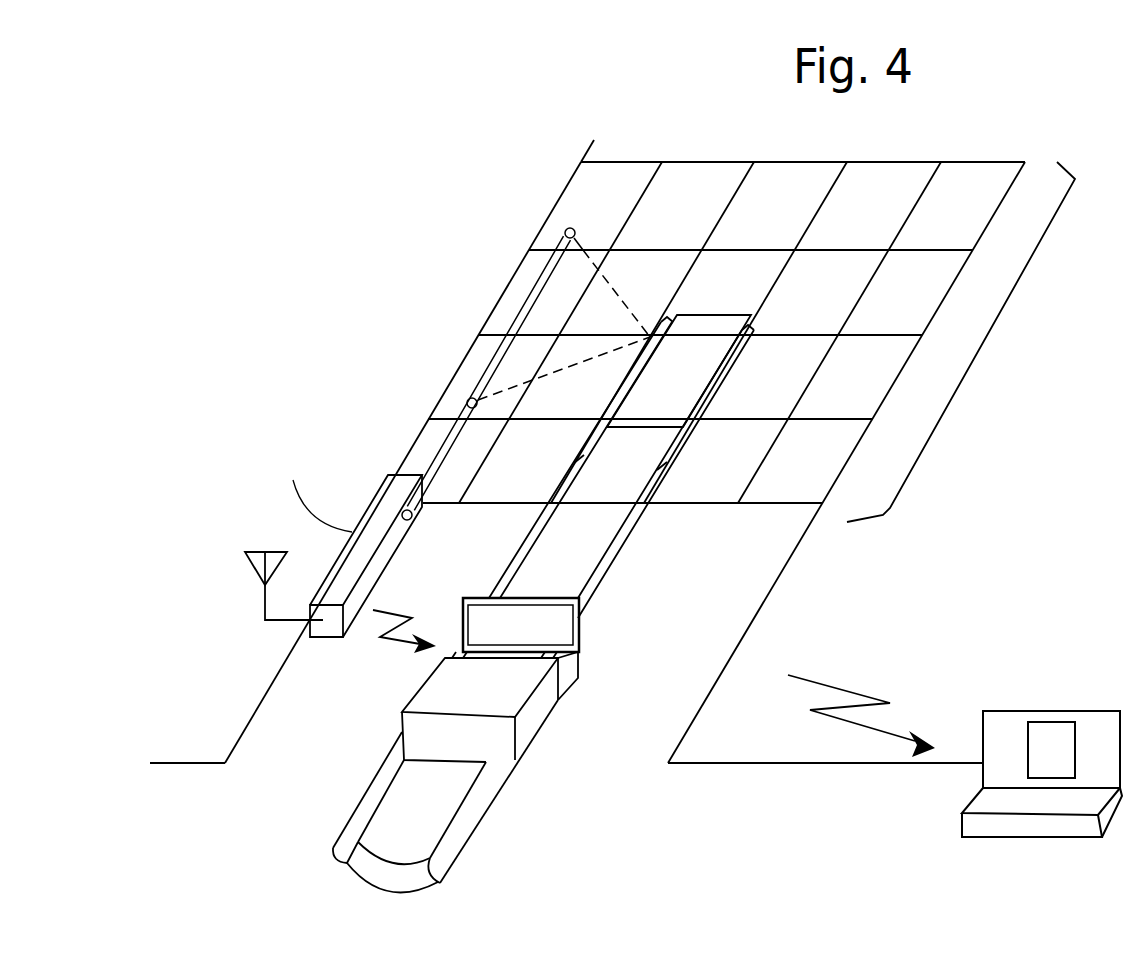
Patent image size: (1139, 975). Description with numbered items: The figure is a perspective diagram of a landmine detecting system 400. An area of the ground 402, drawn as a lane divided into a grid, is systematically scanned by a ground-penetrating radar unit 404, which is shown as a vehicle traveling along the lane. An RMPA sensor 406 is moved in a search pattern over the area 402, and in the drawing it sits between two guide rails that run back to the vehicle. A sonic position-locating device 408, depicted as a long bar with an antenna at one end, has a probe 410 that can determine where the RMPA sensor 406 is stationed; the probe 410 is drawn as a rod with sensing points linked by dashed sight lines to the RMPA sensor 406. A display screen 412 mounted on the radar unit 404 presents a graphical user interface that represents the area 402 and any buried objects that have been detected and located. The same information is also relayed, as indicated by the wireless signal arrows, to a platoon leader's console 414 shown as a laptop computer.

The landmine detecting system 400 is at (316, 285).
The area of the ground 402 is at (982, 348).
The ground-penetrating radar unit 404 is at (542, 741).
The RMPA sensor 406 is at (686, 408).
The sonic position-locating device 408 is at (387, 562).
The probe 410 is at (535, 287).
The display screen 412 is at (563, 620).
The platoon leader's console 414 is at (1068, 710).